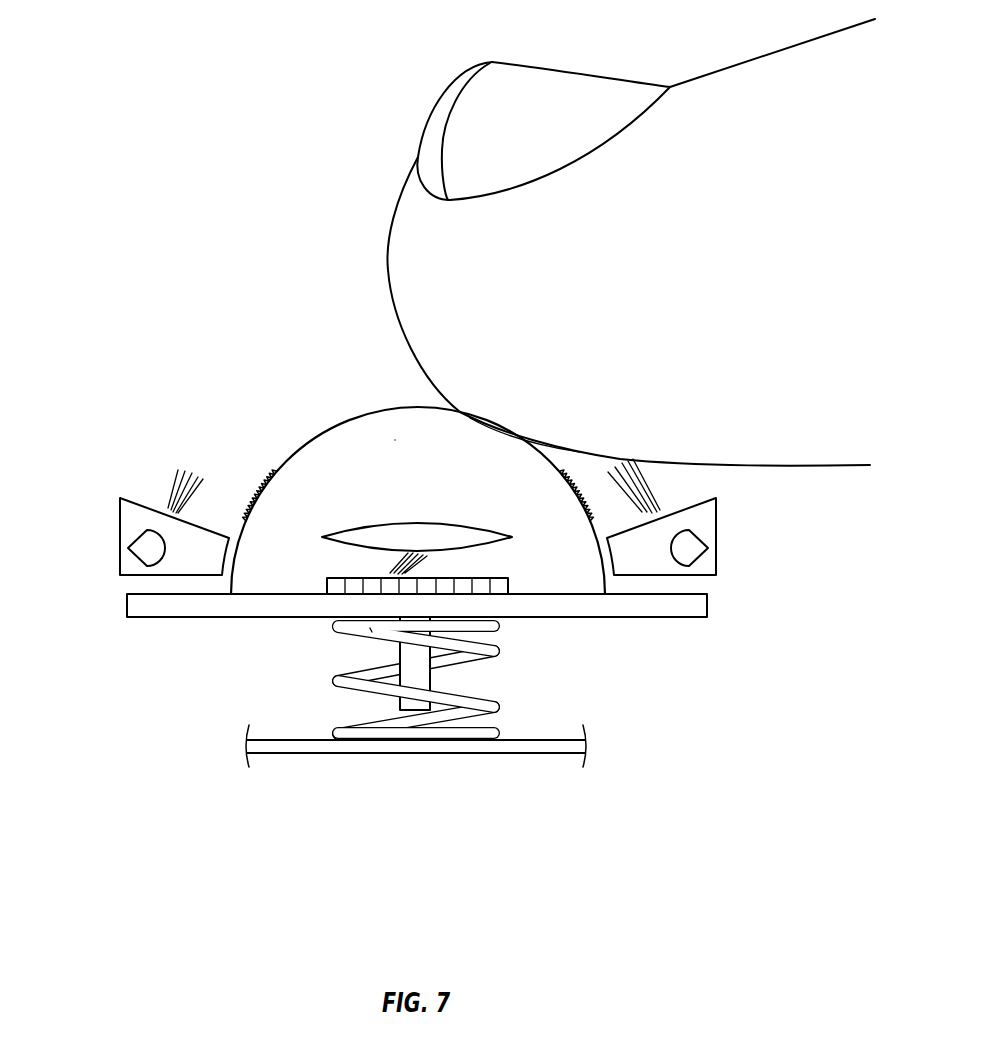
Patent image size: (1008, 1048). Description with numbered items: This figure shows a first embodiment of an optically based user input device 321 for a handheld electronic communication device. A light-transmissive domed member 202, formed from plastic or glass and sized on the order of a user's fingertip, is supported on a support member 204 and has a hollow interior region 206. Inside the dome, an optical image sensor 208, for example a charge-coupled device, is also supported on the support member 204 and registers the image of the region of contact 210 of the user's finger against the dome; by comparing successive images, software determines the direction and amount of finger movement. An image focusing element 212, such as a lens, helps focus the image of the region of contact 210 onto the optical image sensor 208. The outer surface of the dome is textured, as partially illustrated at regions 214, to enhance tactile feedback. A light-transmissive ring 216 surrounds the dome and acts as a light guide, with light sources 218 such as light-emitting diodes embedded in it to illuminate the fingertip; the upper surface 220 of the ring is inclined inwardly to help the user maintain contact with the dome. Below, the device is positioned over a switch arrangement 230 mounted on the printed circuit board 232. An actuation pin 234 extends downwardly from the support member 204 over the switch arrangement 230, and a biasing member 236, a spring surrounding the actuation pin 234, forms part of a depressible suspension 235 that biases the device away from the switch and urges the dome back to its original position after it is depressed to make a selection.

The optically based user input device 321 is at (185, 326).
The region of contact 210 is at (437, 406).
The light-transmissive domed member 202 is at (358, 413).
The hollow interior region 206 is at (437, 459).
The textured regions 214 is at (260, 470).
The light-transmissive ring 216 is at (128, 523).
The light source 218 is at (140, 550).
The upper surface of the light-transmissive ring 220 is at (132, 500).
The image focusing element 212 is at (418, 523).
The optical image sensor 208 is at (510, 587).
The support member 204 is at (260, 615).
The switch arrangement 230 is at (418, 675).
The actuation pin 234 is at (420, 682).
The biasing member 236 is at (373, 630).
The printed circuit board 232 is at (412, 748).
The depressible suspension 235 is at (142, 690).